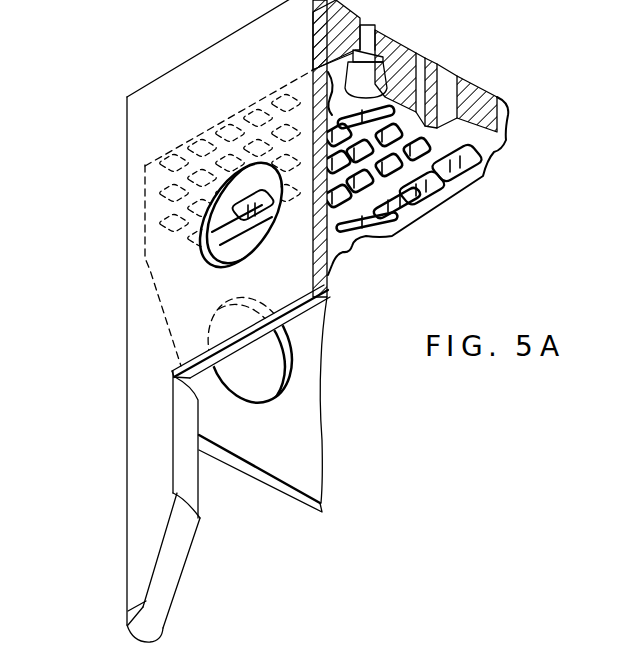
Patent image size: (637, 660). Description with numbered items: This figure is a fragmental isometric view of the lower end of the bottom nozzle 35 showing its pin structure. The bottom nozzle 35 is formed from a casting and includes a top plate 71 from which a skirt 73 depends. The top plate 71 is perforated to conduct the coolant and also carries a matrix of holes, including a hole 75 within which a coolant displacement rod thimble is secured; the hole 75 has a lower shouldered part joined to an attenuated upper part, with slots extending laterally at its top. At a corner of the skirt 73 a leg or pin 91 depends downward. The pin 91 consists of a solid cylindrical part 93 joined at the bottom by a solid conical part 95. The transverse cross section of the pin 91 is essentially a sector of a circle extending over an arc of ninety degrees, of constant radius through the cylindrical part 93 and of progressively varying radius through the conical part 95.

The bottom nozzle 35 is at (125, 266).
The top plate 71 is at (400, 63).
The skirt 73 is at (160, 214).
The hole 75 is at (369, 80).
The pin 91 is at (188, 456).
The solid cylindrical part 93 is at (190, 494).
The solid conical part 95 is at (165, 578).